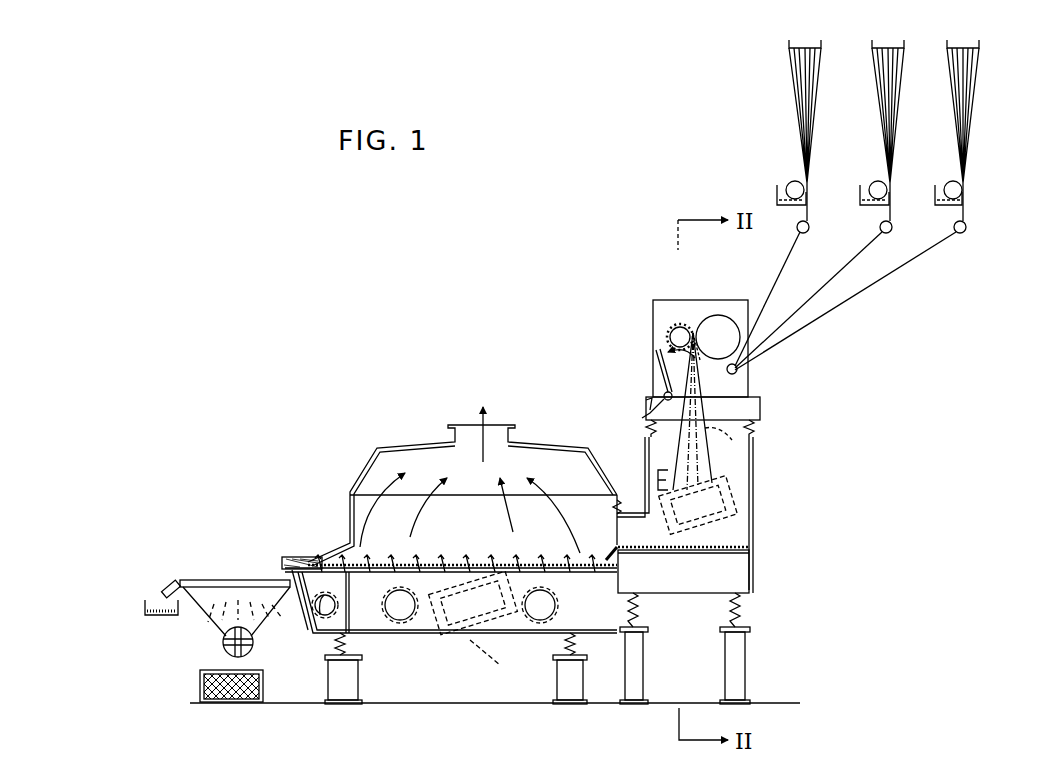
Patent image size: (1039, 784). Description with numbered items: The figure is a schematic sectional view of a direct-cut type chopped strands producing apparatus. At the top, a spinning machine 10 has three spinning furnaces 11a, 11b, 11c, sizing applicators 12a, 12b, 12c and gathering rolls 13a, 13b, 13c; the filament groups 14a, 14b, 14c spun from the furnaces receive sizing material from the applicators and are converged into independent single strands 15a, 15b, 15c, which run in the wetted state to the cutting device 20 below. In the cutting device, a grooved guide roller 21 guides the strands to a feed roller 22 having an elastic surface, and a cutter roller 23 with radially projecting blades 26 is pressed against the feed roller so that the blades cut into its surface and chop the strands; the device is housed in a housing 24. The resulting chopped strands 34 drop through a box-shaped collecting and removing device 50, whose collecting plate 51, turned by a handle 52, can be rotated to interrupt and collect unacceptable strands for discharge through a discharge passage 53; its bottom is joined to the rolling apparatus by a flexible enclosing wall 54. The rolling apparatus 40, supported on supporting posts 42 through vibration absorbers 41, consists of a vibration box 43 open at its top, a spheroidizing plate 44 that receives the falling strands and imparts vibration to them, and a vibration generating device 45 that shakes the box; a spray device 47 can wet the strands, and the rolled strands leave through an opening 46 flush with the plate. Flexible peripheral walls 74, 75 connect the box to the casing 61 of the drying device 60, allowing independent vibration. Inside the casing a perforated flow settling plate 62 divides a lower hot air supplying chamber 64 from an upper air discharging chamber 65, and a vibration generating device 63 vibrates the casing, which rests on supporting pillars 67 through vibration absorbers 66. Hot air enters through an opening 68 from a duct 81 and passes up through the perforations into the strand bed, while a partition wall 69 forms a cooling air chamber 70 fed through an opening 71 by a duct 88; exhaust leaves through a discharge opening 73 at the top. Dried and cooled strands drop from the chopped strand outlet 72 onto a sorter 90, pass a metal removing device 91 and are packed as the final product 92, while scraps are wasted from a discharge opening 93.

The spinning machine 10 is at (778, 152).
The spinning furnace 11a is at (786, 47).
The spinning furnace 11b is at (872, 47).
The spinning furnace 11c is at (948, 47).
The sizing applicator 12a is at (804, 189).
The sizing applicator 12b is at (886, 189).
The sizing applicator 12c is at (962, 191).
The gathering roll 13a is at (807, 232).
The gathering roll 13b is at (891, 227).
The gathering roll 13c is at (967, 232).
The filament group 14a is at (810, 132).
The filament group 14b is at (892, 132).
The filament group 14c is at (966, 132).
The strand 15a is at (790, 258).
The strand 15b is at (848, 306).
The strand 15c is at (906, 276).
The cutting device 20 is at (650, 300).
The guide roller 21 is at (738, 372).
The feed roller 22 is at (722, 316).
The cutter roller 23 is at (681, 324).
The housing 24 is at (665, 362).
The blades 26 is at (668, 337).
The chopped strands 34 is at (714, 445).
The rolling apparatus 40 is at (758, 503).
The vibration absorbers 41 is at (640, 604).
The supporting posts 42 is at (644, 666).
The vibration box 43 is at (755, 513).
The spheroidizing plate 44 is at (714, 554).
The vibration generating device 45 is at (722, 496).
The opening 46 is at (640, 540).
The spray device 47 is at (660, 476).
The collecting and removing device 50 is at (762, 410).
The collecting plate 51 is at (664, 398).
The handle 52 is at (655, 420).
The discharge passage 53 is at (660, 404).
The enclosing wall 54 is at (754, 430).
The drying device 60 is at (375, 448).
The casing 61 is at (360, 470).
The perforated flow settling plate 62 is at (455, 566).
The vibration generating device 63 is at (478, 622).
The hot air supplying chamber 64 is at (505, 640).
The air discharging chamber 65 is at (350, 516).
The vibration absorbers 66 is at (346, 645).
The supporting pillars 67 is at (358, 690).
The opening 68 is at (415, 618).
The partition wall 69 is at (405, 622).
The cooling air chamber 70 is at (302, 632).
The opening 71 is at (298, 600).
The chopped strand outlet 72 is at (285, 558).
The discharge opening 73 is at (495, 428).
The peripheral wall 74 is at (617, 606).
The peripheral wall 75 is at (657, 483).
The duct 81 is at (385, 603).
The duct 88 is at (322, 640).
The sorter 90 is at (225, 580).
The metal removing device 91 is at (222, 644).
The final product 92 is at (200, 690).
The discharge opening 93 is at (162, 588).